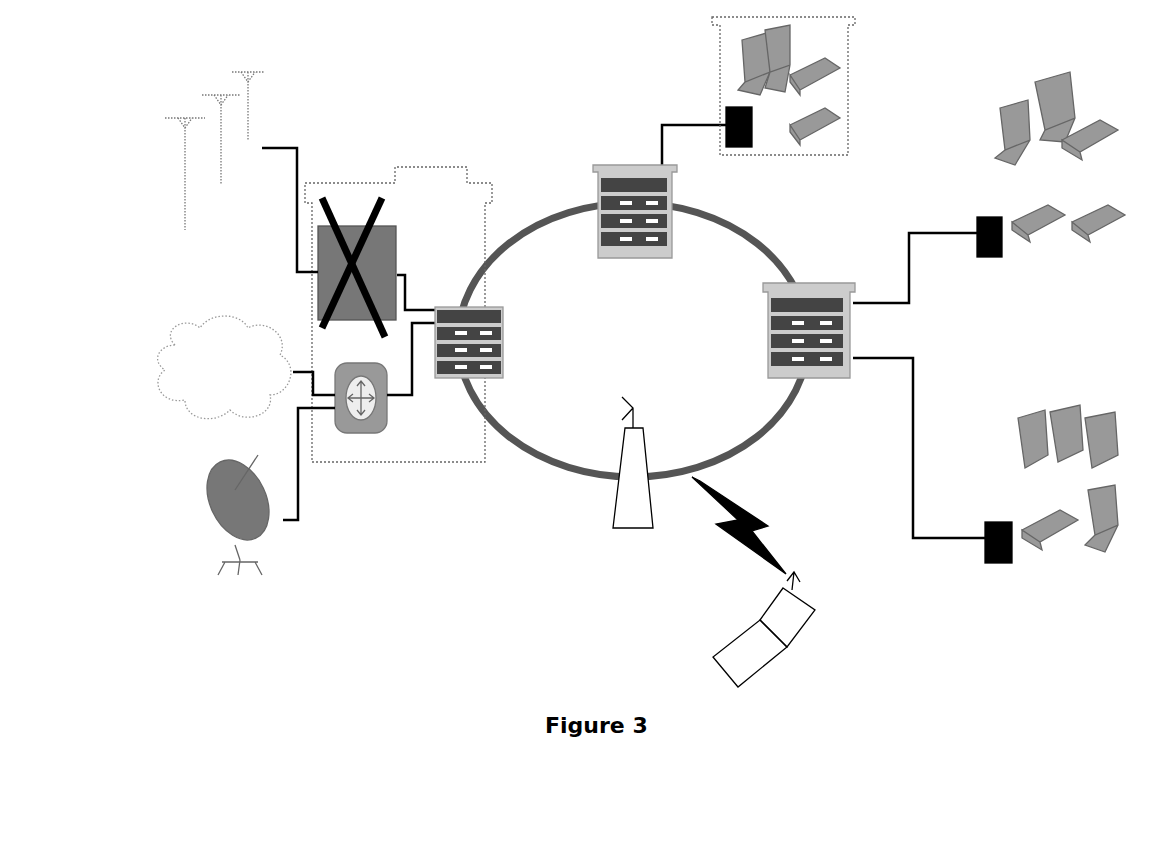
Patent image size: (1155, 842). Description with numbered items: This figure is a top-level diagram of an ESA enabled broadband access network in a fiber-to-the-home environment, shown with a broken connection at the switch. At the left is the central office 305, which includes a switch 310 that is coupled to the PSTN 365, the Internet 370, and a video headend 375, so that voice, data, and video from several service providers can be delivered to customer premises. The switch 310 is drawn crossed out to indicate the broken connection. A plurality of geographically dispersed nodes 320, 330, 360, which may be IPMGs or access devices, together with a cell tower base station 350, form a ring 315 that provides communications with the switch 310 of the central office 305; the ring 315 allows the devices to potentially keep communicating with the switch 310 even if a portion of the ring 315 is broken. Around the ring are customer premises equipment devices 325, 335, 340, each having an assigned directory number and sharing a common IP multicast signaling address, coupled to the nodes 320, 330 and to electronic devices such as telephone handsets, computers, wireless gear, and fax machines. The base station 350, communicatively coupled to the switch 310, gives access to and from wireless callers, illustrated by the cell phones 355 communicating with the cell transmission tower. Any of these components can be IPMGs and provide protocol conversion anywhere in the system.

The central office 305 is at (398, 343).
The switch 310 is at (350, 230).
The ring 315 is at (633, 340).
The node 320 is at (605, 165).
The customer premises equipment device 325 is at (725, 68).
The node 330 is at (813, 287).
The customer premises equipment device 335 is at (995, 108).
The customer premises equipment device 340 is at (1053, 568).
The cell tower base station 350 is at (613, 500).
The cell phones 355 is at (792, 640).
The node 360 is at (491, 358).
The PSTN 365 is at (241, 172).
The Internet 370 is at (296, 374).
The video headend 375 is at (267, 512).